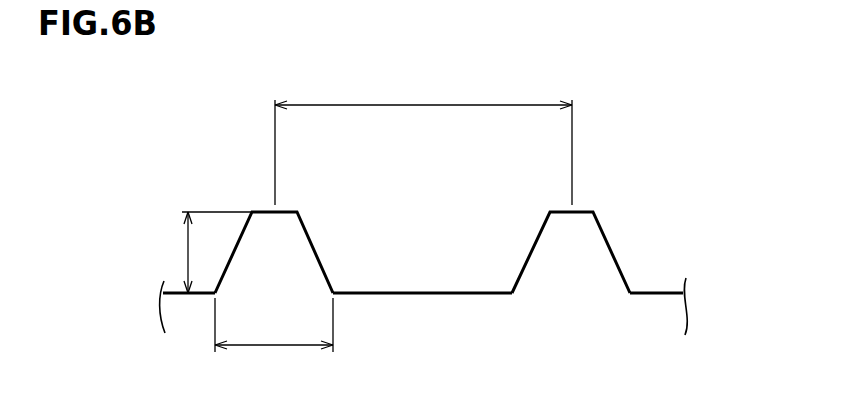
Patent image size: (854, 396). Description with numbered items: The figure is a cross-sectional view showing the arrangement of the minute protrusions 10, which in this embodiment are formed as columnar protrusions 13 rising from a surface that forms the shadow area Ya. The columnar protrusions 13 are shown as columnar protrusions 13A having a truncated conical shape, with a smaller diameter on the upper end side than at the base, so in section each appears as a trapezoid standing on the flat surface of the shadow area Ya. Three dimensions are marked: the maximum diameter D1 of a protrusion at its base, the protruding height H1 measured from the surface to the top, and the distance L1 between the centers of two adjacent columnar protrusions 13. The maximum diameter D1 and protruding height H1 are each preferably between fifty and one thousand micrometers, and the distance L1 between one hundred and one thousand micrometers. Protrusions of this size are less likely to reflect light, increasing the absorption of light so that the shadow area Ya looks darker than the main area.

The minute protrusions 10 is at (316, 252).
The columnar protrusions 13 is at (530, 252).
The columnar protrusions having a truncated conical shape 13A is at (432, 268).
The shadow area Ya is at (424, 293).
The distance between centers of adjacent columnar protrusions L1 is at (423, 140).
The protruding height H1 is at (201, 252).
The maximum diameter D1 is at (274, 338).